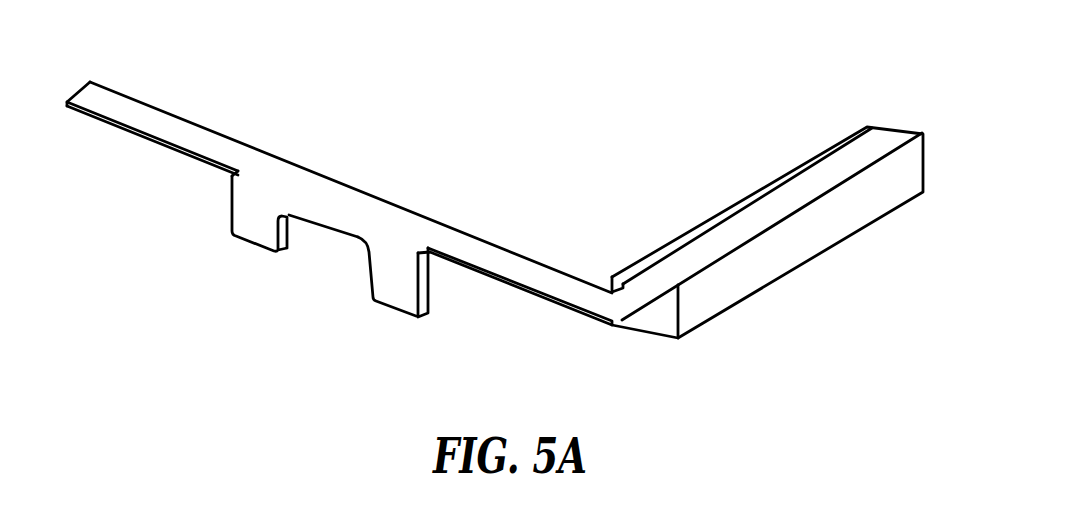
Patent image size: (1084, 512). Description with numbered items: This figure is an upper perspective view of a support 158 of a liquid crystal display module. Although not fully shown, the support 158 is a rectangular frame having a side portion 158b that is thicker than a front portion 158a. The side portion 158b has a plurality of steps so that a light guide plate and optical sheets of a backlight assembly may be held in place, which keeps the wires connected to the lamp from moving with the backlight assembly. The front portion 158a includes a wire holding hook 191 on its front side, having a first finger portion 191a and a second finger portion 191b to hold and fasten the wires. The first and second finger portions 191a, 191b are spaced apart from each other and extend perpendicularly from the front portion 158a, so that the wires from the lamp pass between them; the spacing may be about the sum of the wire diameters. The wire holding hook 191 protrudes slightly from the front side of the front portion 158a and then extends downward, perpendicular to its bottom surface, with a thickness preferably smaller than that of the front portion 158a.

The support 158 is at (447, 102).
The front portion 158a is at (172, 140).
The side portion 158b is at (878, 153).
The wire holding hook 191 is at (397, 402).
The first finger portion 191a is at (260, 233).
The second finger portion 191b is at (395, 293).